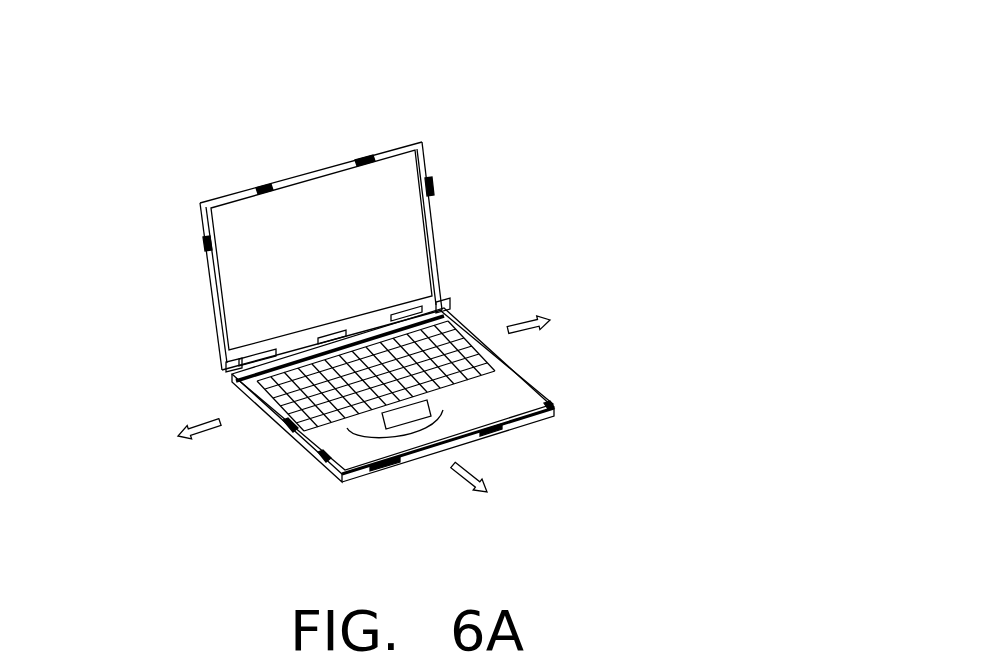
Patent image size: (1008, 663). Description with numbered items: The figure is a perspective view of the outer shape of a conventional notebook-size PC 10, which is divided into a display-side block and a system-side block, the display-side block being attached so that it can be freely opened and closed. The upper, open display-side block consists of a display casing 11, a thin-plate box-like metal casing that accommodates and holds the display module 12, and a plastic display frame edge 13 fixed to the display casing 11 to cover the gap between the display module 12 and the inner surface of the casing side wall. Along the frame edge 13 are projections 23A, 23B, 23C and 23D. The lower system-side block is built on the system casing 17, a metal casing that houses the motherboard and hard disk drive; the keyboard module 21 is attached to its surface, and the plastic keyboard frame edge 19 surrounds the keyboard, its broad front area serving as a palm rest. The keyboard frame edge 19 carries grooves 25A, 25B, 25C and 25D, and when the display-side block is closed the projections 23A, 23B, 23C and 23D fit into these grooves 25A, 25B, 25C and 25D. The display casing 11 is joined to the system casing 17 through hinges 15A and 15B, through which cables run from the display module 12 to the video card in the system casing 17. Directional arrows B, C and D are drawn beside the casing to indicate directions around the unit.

The notebook-size PC 10 is at (518, 66).
The display casing 11 is at (402, 146).
The display module 12 is at (214, 297).
The display frame edge 13 is at (433, 216).
The hinge 15A is at (233, 365).
The hinge 15B is at (444, 304).
The system casing 17 is at (282, 432).
The keyboard frame edge 19 is at (530, 397).
The keyboard module 21 is at (257, 398).
The projection 23A is at (205, 243).
The projection 23B is at (262, 186).
The projection 23C is at (362, 152).
The projection 23D is at (428, 184).
The groove 25A is at (312, 460).
The groove 25B is at (400, 462).
The groove 25C is at (505, 432).
The groove 25D is at (552, 403).
The direction B is at (170, 428).
The direction C is at (552, 320).
The direction D is at (482, 494).